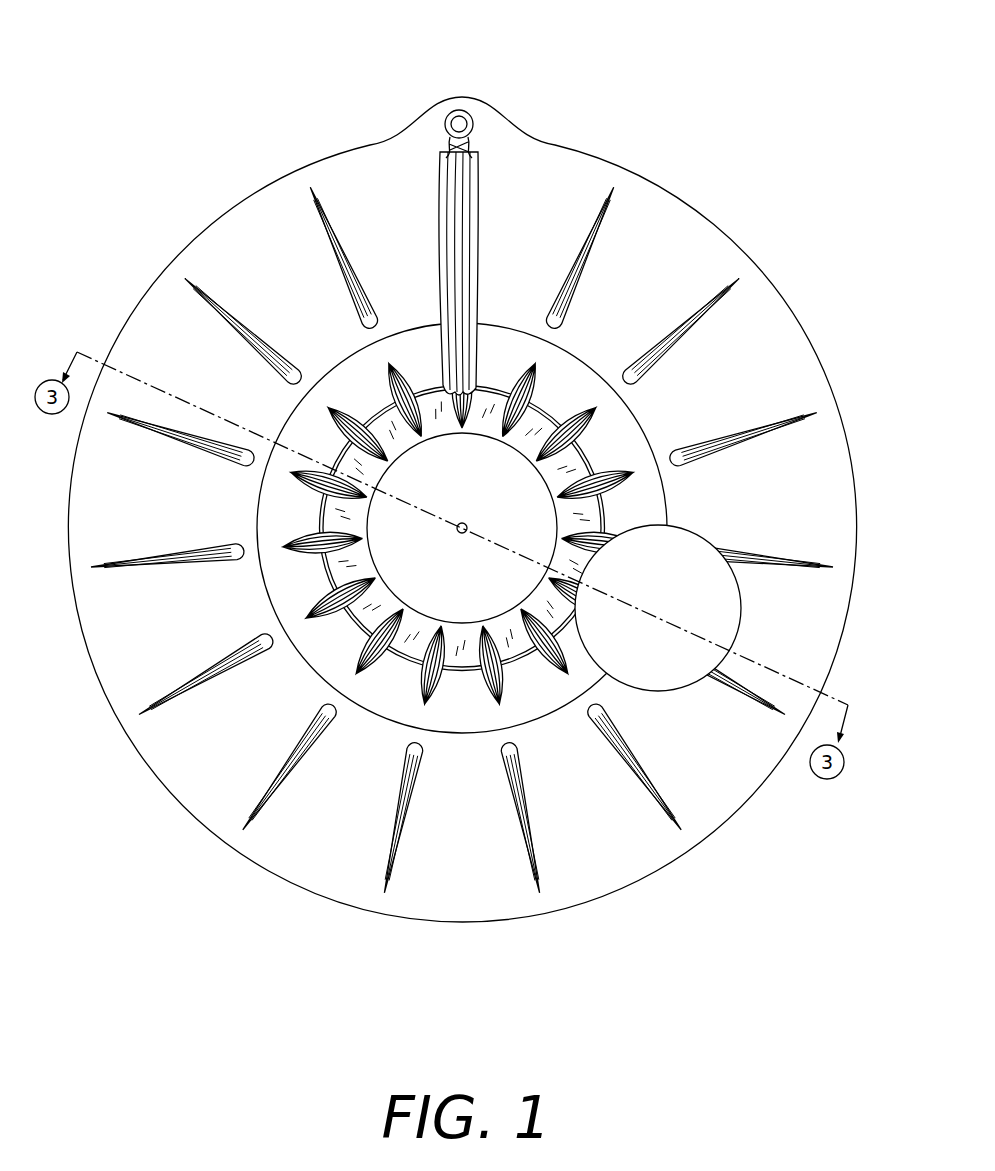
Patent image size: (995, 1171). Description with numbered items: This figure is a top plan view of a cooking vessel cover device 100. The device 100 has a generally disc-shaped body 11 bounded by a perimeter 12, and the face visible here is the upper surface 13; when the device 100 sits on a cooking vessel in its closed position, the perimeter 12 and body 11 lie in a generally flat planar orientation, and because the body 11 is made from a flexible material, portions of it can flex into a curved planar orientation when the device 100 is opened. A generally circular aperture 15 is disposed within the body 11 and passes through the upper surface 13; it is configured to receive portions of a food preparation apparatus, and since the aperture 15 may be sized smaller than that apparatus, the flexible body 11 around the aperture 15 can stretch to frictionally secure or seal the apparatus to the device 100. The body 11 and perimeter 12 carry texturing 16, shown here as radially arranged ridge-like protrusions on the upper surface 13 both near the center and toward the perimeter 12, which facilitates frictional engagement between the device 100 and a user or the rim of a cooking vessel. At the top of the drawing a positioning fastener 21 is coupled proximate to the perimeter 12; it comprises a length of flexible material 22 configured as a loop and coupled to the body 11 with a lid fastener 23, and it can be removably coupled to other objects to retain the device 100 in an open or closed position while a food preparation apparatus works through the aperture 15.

The cooking vessel cover device 100 is at (462, 497).
The body 11 is at (462, 543).
The perimeter 12 is at (202, 795).
The upper surface 13 is at (670, 261).
The aperture 15 is at (677, 562).
The texturing 16 is at (323, 225).
The positioning fastener 21 is at (464, 241).
The length of flexible material 22 is at (472, 165).
The lid fastener 23 is at (443, 145).